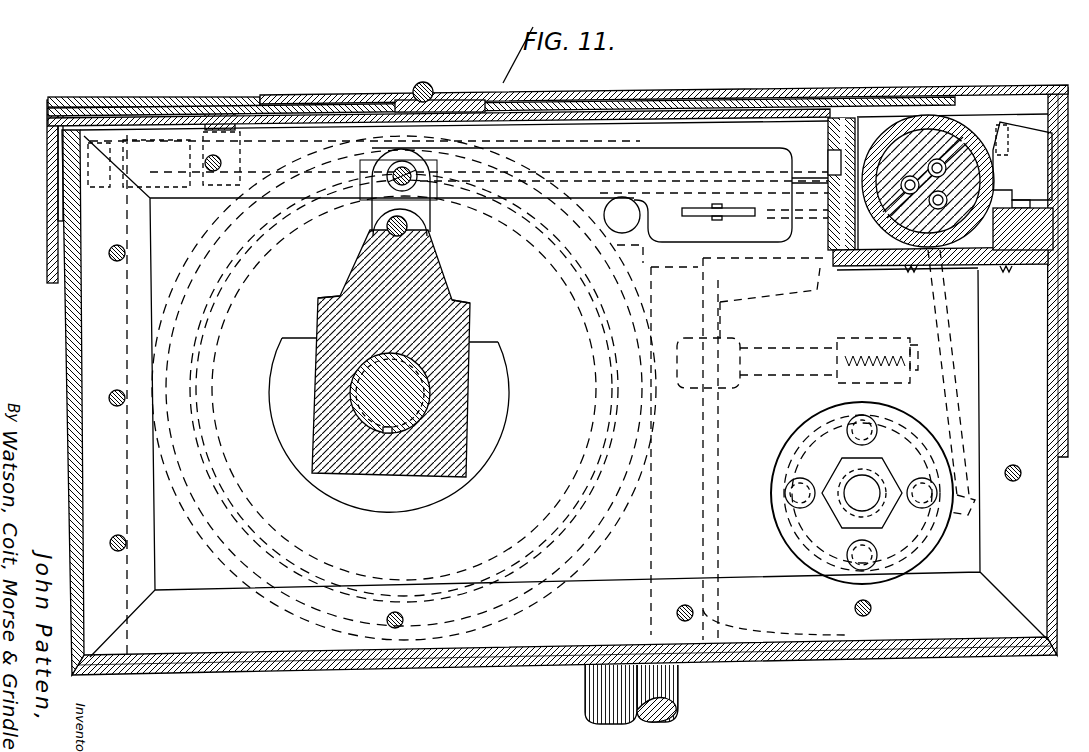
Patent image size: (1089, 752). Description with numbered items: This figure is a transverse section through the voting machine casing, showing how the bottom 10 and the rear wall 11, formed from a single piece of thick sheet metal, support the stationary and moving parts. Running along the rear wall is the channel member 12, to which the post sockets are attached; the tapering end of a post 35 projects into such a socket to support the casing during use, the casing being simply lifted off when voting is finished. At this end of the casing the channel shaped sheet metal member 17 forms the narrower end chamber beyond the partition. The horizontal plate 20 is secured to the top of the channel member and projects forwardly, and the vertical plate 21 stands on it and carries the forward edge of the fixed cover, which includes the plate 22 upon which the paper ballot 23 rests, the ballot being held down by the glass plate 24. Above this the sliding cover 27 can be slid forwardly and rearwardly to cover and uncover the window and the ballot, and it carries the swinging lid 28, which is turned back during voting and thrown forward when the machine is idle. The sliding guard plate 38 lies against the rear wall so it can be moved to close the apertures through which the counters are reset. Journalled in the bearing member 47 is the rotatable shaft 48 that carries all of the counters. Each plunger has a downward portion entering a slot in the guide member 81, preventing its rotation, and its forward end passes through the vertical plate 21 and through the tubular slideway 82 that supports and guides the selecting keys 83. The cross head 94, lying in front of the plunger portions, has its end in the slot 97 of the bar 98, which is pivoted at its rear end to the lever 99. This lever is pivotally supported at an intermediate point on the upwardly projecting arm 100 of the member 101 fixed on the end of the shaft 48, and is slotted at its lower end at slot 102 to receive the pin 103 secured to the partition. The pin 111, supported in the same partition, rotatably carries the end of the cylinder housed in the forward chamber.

The bottom 10 is at (445, 663).
The rear wall 11 is at (65, 338).
The channel member 12 is at (725, 416).
The channel shaped sheet metal member 17 is at (1048, 527).
The horizontal plate 20 is at (873, 268).
The vertical plate 21 is at (828, 148).
The plate 22 is at (785, 107).
The paper ballot 23 is at (580, 102).
The glass plate 24 is at (643, 100).
The sliding cover 27 is at (296, 104).
The swinging lid 28 is at (917, 90).
The post 35 is at (678, 686).
The sliding guard plate 38 is at (53, 252).
The bearing member 47 is at (402, 510).
The rotatable shaft 48 is at (457, 399).
The guide member 81 is at (620, 258).
The tubular slideway 82 is at (947, 132).
The selecting keys 83 is at (1020, 135).
The cross head 94 is at (746, 218).
The slot 97 is at (662, 215).
The bar 98 is at (608, 160).
The lever 99 is at (368, 210).
The upwardly projecting arm 100 is at (432, 258).
The member 101 is at (467, 330).
The slot 102 is at (317, 316).
The pin 103 is at (452, 296).
The pin 111 is at (850, 497).